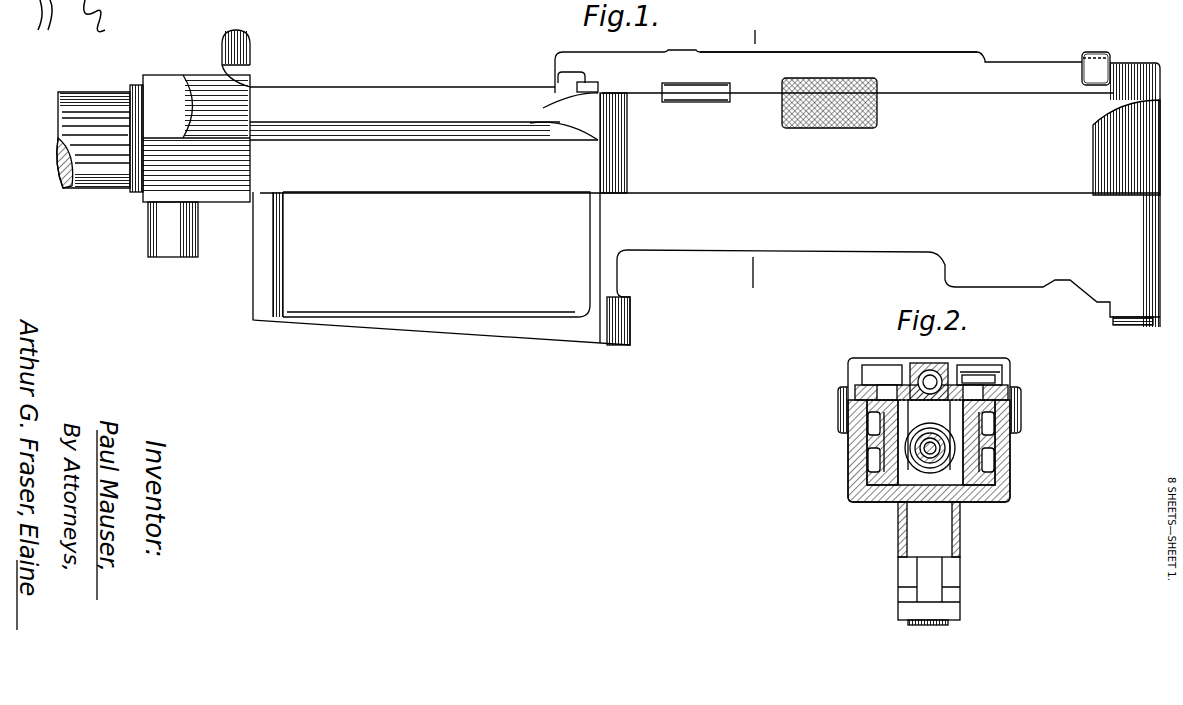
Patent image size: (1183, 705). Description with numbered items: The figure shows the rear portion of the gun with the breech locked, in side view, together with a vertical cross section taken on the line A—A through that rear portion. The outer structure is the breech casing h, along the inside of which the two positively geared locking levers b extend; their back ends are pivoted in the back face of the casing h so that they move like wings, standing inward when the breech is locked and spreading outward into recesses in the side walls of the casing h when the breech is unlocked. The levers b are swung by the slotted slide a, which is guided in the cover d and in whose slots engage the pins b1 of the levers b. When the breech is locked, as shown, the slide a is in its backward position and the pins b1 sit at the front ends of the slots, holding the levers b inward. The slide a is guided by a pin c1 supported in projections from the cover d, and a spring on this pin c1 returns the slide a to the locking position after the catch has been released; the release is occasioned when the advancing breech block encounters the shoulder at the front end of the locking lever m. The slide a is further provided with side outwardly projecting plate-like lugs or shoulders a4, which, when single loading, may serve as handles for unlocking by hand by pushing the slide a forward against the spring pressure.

In FIG. 1, the breech casing h is at (651, 187).
In FIG. 2, the breech casing h is at (941, 563).
In FIG. 1, the plate-like lugs or shoulders a4 is at (827, 130).
In FIG. 2, the plate-like lugs or shoulders a4 is at (929, 430).
In FIG. 1, the cover d is at (838, 39).
In FIG. 2, the cover d is at (882, 362).
In FIG. 1, the rear end piece of receiver e is at (1111, 57).
In FIG. 1, the section line A— A is at (763, 157).
In FIG. 2, the locking lever m is at (990, 368).
In FIG. 2, the pins b1 is at (852, 376).
In FIG. 2, the slotted slide a is at (931, 407).
In FIG. 2, the locking levers b is at (866, 460).
In FIG. 2, the pin c1 is at (930, 394).
In FIG. 2, the stem wall i is at (891, 529).